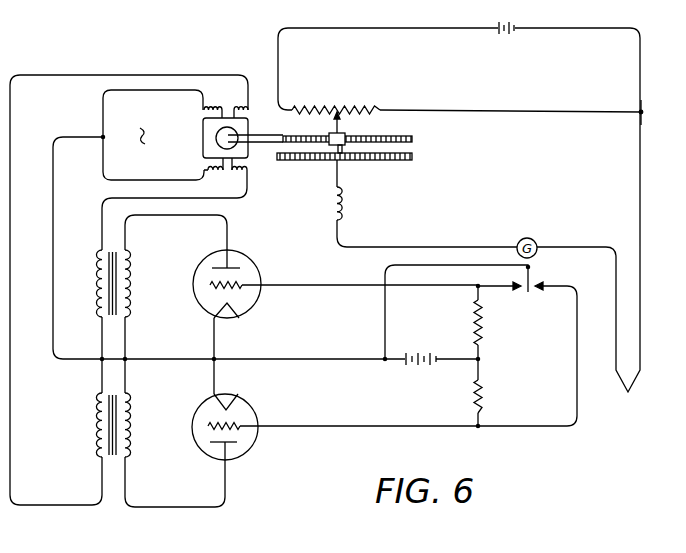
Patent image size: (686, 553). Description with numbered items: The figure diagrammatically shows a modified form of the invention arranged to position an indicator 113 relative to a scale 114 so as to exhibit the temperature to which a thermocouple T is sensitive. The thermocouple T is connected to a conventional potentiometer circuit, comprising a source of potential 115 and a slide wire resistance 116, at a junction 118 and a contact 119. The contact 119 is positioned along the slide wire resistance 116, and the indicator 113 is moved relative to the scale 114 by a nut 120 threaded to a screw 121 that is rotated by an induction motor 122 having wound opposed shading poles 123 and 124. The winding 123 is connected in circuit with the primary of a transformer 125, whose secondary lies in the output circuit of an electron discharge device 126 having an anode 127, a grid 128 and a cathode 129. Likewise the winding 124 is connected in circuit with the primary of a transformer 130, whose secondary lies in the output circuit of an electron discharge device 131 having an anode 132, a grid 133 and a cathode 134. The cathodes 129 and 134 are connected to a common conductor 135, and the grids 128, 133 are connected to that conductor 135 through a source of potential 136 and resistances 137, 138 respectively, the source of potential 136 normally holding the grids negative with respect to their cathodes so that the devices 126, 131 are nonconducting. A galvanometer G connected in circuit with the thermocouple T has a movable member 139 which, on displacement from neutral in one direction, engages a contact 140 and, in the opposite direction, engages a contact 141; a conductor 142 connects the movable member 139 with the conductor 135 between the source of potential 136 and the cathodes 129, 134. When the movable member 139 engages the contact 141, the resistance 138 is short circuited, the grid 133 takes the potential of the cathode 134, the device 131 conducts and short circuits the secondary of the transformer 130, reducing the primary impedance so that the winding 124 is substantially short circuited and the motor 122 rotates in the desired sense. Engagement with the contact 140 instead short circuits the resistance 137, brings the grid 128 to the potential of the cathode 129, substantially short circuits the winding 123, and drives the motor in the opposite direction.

The indicator 113 is at (344, 148).
The scale 114 is at (388, 163).
The source of potential 115 is at (505, 33).
The slide wire resistance 116 is at (353, 107).
The junction 118 is at (645, 113).
The contact 119 is at (340, 119).
The nut 120 is at (322, 133).
The screw 121 is at (408, 136).
The induction motor 122 is at (175, 135).
The shading pole winding 123 is at (248, 106).
The shading pole winding 124 is at (248, 174).
The transformer 125 is at (113, 460).
The electron discharge device 126 is at (194, 455).
The anode 127 is at (237, 444).
The grid 128 is at (206, 425).
The cathode 129 is at (238, 403).
The transformer 130 is at (113, 295).
The electron discharge device 131 is at (206, 311).
The anode 132 is at (241, 267).
The grid 133 is at (208, 284).
The cathode 134 is at (237, 311).
The common conductor 135 is at (316, 358).
The source of potential 136 is at (410, 366).
The resistance 137 is at (488, 386).
The resistance 138 is at (488, 320).
The movable member 139 is at (532, 273).
The contact 140 is at (540, 290).
The contact 141 is at (514, 289).
The conductor 142 is at (390, 266).
The thermocouple T is at (656, 390).